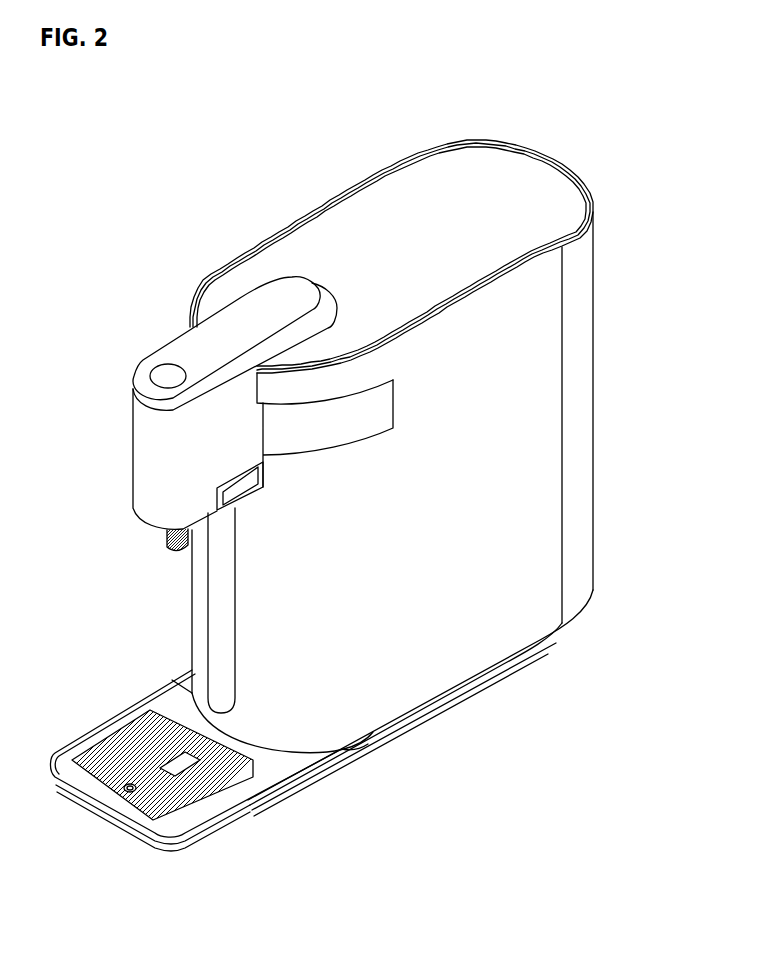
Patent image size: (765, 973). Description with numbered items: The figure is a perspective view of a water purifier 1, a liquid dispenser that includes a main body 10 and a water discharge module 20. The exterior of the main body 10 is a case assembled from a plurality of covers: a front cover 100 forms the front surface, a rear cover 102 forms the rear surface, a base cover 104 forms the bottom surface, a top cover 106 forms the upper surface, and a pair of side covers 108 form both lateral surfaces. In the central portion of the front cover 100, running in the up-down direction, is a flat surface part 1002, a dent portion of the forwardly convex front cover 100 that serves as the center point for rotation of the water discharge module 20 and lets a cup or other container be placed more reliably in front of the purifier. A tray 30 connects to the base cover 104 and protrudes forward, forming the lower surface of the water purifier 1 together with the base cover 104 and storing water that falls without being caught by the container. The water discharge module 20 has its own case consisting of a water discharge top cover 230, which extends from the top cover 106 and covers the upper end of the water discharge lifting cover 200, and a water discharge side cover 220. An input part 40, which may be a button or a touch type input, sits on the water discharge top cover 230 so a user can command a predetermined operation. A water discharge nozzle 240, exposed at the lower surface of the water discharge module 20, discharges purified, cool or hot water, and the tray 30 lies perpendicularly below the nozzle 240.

The water purifier 1 is at (121, 131).
The main body 10 is at (608, 154).
The water discharge module 20 is at (114, 419).
The tray 30 is at (85, 742).
The input part 40 is at (170, 376).
The front cover 100 is at (337, 690).
The rear cover 102 is at (585, 351).
The base cover 104 is at (463, 697).
The top cover 106 is at (393, 213).
The side covers 108 is at (477, 630).
The water discharge lifting cover 200 is at (143, 457).
The water discharge side cover 220 is at (382, 406).
The water discharge top cover 230 is at (247, 320).
The water discharge nozzle 240 is at (168, 538).
The flat surface part 1002 is at (218, 600).